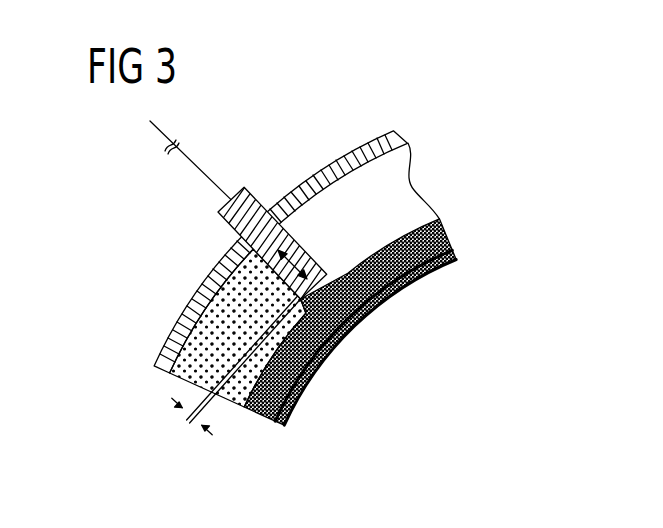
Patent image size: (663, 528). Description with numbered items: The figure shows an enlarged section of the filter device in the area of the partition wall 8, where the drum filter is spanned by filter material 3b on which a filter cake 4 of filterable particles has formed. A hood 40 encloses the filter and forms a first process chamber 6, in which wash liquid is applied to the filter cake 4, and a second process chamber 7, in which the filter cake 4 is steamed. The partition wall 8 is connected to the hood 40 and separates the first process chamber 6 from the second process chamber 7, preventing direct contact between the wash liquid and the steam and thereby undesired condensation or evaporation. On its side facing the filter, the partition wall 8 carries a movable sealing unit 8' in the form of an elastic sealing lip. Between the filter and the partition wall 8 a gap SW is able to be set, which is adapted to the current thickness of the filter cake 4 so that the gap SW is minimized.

The filter material 3b is at (428, 274).
The filter cake 4 is at (448, 235).
The first process chamber 6 is at (222, 345).
The second process chamber 7 is at (412, 187).
The partition wall 8 is at (269, 214).
The movable sealing unit 8' is at (357, 290).
The hood 40 is at (306, 182).
The gap SW is at (188, 425).